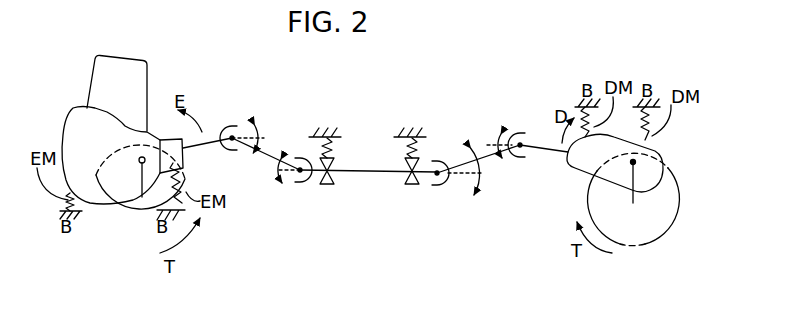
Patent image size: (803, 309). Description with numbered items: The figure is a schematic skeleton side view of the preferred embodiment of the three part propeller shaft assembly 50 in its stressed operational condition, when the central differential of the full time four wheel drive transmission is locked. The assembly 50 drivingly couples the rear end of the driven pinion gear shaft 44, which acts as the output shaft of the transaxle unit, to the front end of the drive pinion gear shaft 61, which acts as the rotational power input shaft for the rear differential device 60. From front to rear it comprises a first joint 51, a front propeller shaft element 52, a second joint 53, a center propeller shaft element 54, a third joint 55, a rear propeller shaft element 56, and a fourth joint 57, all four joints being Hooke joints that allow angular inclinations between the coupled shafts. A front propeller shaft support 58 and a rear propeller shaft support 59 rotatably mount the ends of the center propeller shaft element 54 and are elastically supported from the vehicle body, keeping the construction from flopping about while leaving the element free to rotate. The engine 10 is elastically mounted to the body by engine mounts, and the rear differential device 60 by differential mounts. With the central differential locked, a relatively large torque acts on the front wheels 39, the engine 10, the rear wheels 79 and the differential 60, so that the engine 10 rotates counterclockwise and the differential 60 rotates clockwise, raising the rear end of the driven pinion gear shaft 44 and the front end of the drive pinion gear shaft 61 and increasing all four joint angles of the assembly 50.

The engine 10 is at (112, 65).
The front wheels 39 is at (115, 237).
The driven pinion gear shaft 44 is at (213, 133).
The three part propeller shaft assembly 50 is at (377, 195).
The first joint 51 is at (228, 160).
The front propeller shaft element 52 is at (262, 166).
The second joint 53 is at (306, 183).
The center propeller shaft element 54 is at (380, 174).
The third joint 55 is at (441, 187).
The rear propeller shaft element 56 is at (486, 176).
The fourth joint 57 is at (520, 158).
The front propeller shaft support 58 is at (334, 154).
The rear propeller shaft support 59 is at (422, 148).
The rear differential device casing 60 is at (660, 147).
The drive pinion gear shaft 61 is at (564, 153).
The rear wheels 79 is at (665, 243).